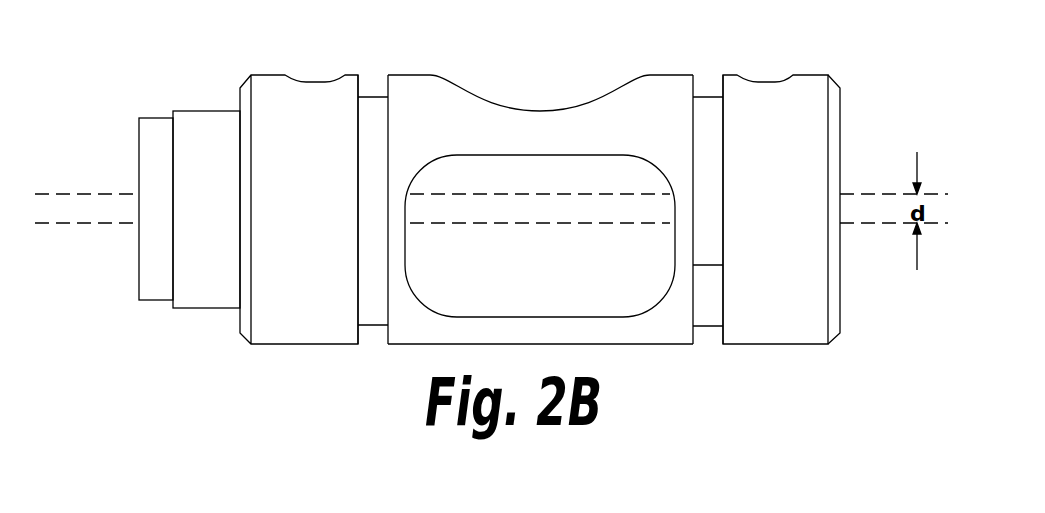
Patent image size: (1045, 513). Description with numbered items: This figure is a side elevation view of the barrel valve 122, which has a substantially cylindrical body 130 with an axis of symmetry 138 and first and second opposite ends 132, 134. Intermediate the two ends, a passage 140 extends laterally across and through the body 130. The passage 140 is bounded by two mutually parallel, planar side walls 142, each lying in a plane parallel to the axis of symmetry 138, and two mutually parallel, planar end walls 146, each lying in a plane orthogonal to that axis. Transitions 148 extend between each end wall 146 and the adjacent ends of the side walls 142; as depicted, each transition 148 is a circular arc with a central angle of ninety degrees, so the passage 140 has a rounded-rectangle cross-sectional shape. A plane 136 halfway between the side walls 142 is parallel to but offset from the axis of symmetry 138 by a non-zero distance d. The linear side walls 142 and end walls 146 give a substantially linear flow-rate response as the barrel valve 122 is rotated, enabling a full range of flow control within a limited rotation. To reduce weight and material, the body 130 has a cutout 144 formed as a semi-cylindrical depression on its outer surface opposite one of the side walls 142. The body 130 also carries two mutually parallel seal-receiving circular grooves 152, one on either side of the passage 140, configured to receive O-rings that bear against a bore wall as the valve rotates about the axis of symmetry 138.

The barrel valve 122 is at (213, 111).
The body 130 is at (788, 322).
The first end 132 is at (842, 115).
The second end 134 is at (139, 172).
The plane 136 is at (860, 223).
The axis of symmetry 138 is at (867, 193).
The passage 140 is at (535, 188).
The side walls 142 is at (598, 155).
The cutout 144 is at (543, 111).
The end walls 146 is at (404, 238).
The transitions 148 is at (428, 168).
The seal-receiving circular groove 152 is at (375, 97).